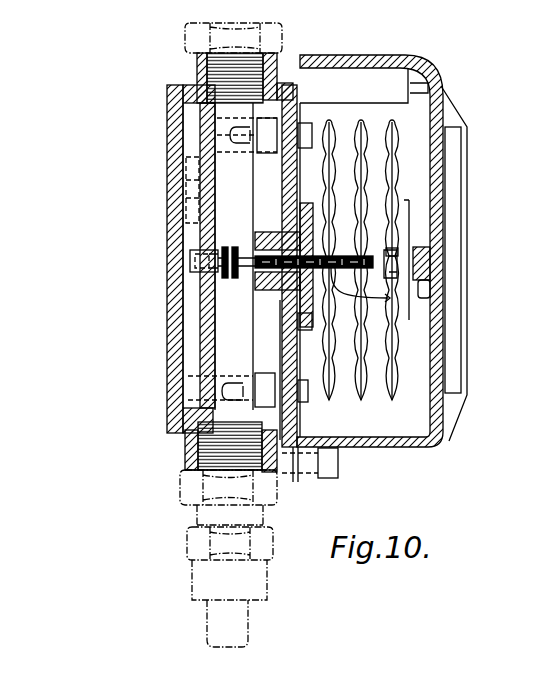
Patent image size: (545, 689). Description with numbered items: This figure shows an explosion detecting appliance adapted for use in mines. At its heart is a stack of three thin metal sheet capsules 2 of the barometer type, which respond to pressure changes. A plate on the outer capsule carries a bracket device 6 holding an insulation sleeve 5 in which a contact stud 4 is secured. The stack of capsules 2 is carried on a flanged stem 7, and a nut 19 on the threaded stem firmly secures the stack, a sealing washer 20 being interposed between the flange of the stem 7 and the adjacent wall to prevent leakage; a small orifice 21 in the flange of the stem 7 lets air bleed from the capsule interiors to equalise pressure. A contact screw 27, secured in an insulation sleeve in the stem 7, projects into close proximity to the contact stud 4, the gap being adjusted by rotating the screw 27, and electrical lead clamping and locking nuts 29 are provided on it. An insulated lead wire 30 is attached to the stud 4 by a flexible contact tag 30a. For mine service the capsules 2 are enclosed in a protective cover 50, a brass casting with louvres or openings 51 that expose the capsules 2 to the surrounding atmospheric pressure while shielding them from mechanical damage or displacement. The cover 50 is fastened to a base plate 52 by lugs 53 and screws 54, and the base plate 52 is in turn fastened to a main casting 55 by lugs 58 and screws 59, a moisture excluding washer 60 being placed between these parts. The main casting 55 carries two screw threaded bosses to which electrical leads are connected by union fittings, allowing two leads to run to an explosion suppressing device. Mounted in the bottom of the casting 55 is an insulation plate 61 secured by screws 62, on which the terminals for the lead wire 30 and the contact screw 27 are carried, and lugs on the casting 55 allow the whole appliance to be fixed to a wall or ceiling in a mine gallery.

The capsules 2 is at (358, 422).
The contact stud 4 is at (384, 275).
The insulation sleeve 5 is at (392, 248).
The bracket device 6 is at (401, 242).
The flanged stem 7 is at (307, 203).
The nut 19 is at (275, 232).
The sealing washer 20 is at (290, 212).
The orifice 21 is at (285, 344).
The contact screw 27 is at (344, 200).
The electrical lead clamping and locking nuts 29 is at (236, 247).
The insulated lead wire 30 is at (390, 302).
The flexible contact tag 30a is at (440, 303).
The protective cover 50 is at (421, 84).
The louvres or openings 51 is at (461, 203).
The base plate 52 is at (298, 430).
The lugs 53 is at (300, 482).
The screws 54 is at (338, 465).
The main casting 55 is at (176, 362).
The lugs 58 is at (263, 373).
The screws 59 is at (307, 402).
The moisture excluding washer 60 is at (196, 445).
The insulation plate 61 is at (200, 222).
The screws 62 is at (190, 185).